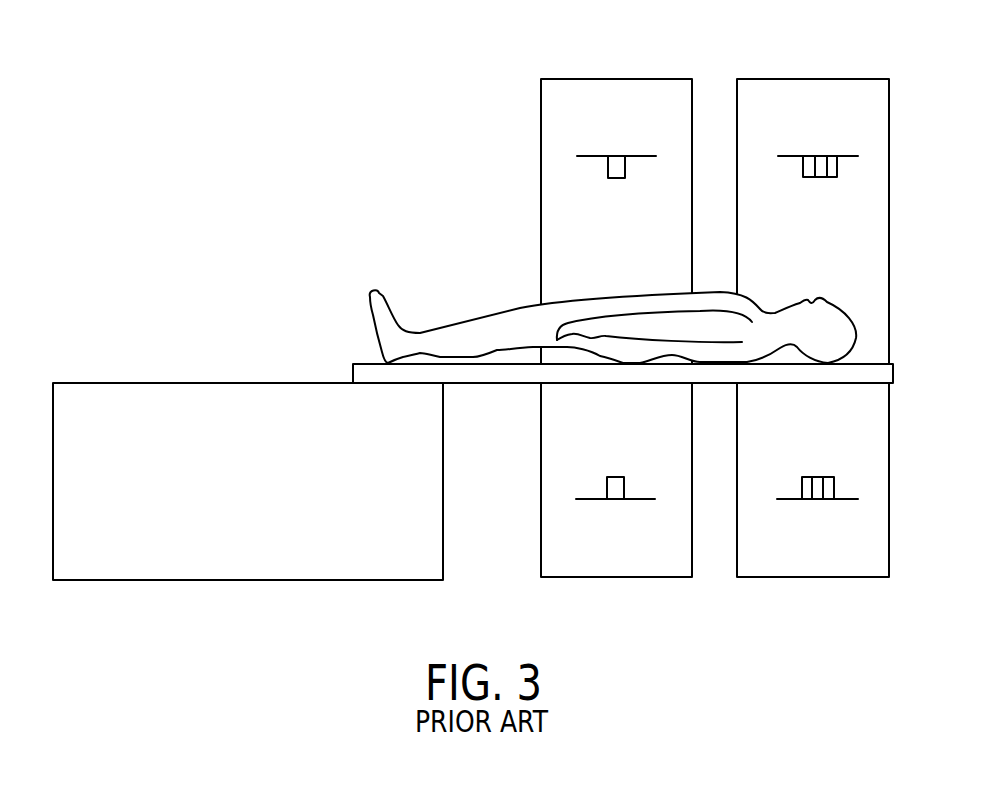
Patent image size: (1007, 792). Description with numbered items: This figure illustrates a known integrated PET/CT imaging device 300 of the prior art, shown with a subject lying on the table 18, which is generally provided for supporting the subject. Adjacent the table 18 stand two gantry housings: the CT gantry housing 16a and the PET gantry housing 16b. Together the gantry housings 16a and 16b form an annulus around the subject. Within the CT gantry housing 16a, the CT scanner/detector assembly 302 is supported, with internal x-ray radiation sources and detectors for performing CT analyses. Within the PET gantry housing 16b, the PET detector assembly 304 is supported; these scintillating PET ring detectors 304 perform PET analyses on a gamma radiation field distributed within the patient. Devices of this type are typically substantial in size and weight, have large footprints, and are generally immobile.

The integrated PET/CT imaging device 300 is at (340, 192).
The CT gantry housing 16a is at (637, 78).
The PET gantry housing 16b is at (833, 78).
The CT scanner/detector assembly 302 is at (592, 157).
The PET detector assembly 304 is at (837, 168).
The table 18 is at (361, 363).